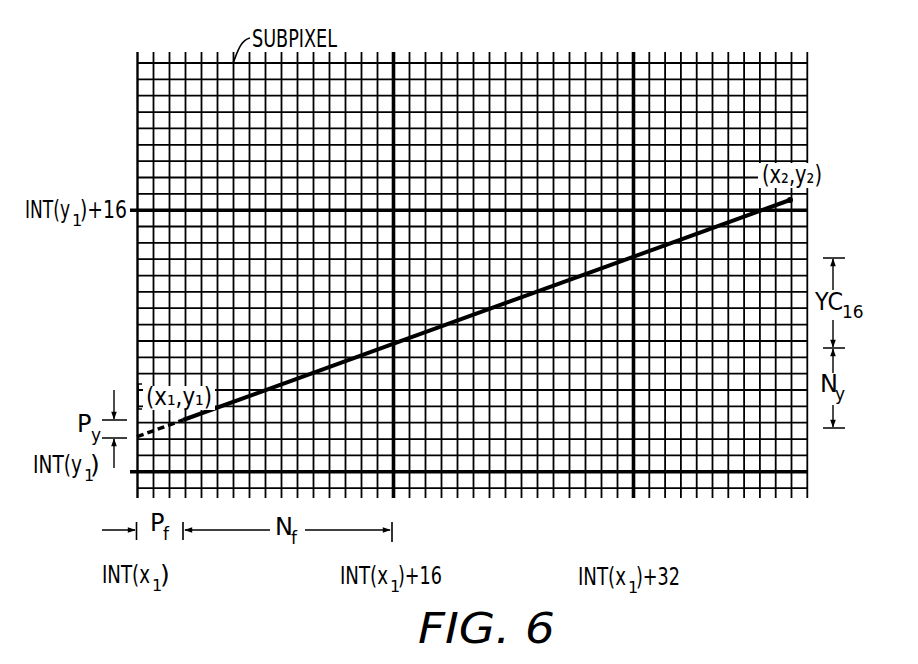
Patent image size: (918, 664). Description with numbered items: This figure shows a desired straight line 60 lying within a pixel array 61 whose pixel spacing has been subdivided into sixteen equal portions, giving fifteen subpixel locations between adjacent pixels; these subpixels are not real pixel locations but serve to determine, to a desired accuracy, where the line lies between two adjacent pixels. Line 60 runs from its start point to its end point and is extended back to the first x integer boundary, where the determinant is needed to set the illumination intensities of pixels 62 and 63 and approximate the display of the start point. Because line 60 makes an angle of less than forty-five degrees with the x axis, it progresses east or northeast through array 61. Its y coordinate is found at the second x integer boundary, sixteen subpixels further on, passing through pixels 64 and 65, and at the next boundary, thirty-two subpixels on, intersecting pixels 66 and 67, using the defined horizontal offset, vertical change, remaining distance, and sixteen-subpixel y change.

The line 60 is at (334, 364).
The pixel array 61 is at (106, 50).
The pixel 62 is at (137, 210).
The pixel 63 is at (137, 473).
The pixel 64 is at (392, 210).
The pixel 65 is at (394, 482).
The pixel 66 is at (633, 212).
The pixel 67 is at (633, 481).